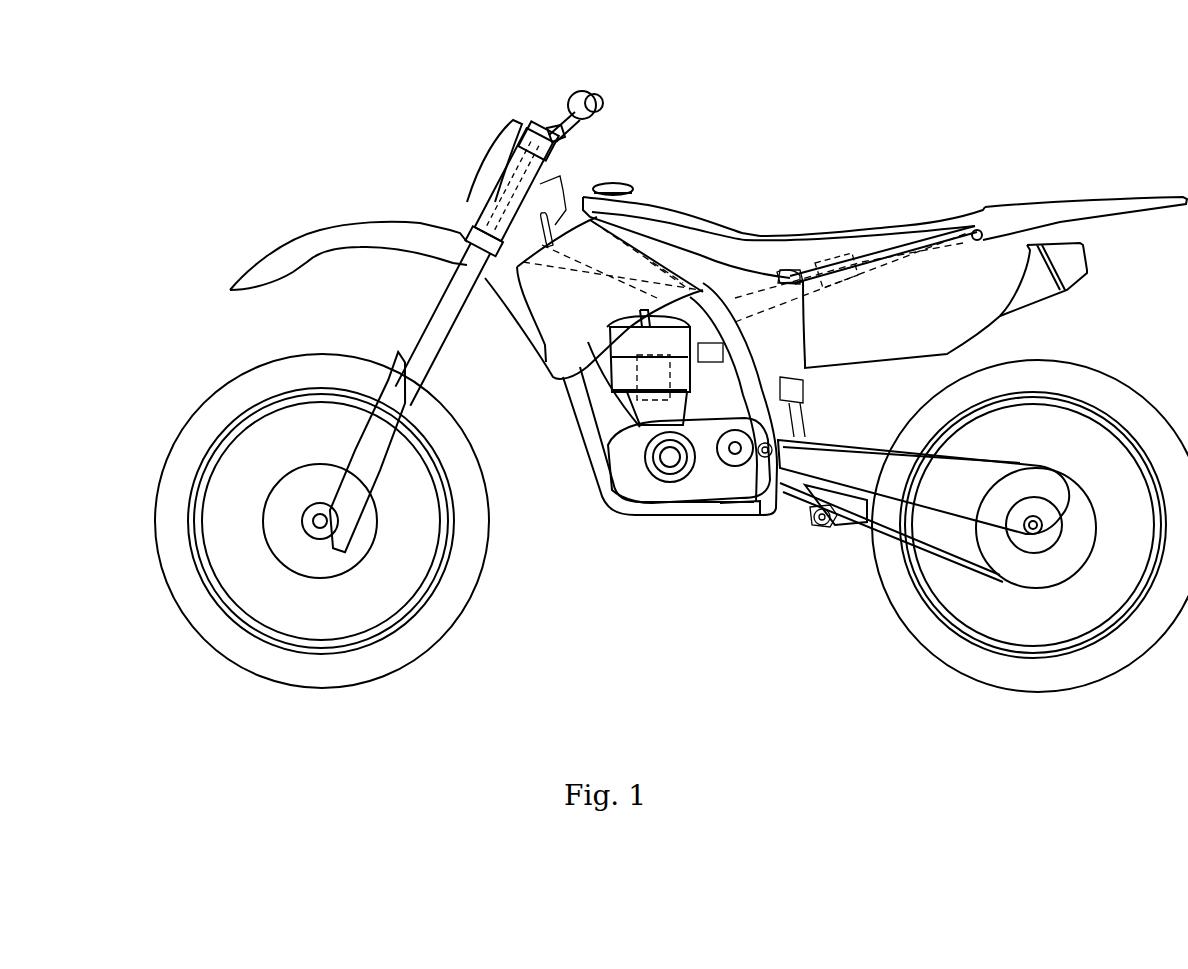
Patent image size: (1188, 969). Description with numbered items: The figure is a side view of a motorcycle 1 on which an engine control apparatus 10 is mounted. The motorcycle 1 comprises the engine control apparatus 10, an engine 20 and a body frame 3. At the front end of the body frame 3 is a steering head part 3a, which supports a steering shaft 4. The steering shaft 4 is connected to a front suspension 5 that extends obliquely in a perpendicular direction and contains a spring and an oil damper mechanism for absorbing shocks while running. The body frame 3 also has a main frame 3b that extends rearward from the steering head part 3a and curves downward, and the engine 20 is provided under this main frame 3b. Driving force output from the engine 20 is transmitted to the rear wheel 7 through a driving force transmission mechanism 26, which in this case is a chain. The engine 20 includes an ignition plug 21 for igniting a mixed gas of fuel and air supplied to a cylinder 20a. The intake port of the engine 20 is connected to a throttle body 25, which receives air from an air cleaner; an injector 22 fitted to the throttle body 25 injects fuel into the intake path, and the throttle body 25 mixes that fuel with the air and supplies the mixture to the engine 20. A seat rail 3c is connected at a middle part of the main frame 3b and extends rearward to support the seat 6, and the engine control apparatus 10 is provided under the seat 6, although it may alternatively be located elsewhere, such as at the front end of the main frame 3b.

The motorcycle 1 is at (808, 60).
The body frame 3 is at (717, 313).
The steering head part 3a is at (540, 184).
The main frame 3b is at (617, 393).
The seat rail 3c is at (927, 248).
The steering shaft 4 is at (515, 178).
The front suspension 5 is at (452, 308).
The seat 6 is at (867, 230).
The rear wheel 7 is at (903, 595).
The engine control apparatus 10 is at (825, 253).
The engine 20 is at (687, 324).
The cylinder 20a is at (627, 373).
The ignition plug 21 is at (673, 280).
The injector 22 is at (787, 270).
The throttle body 25 is at (712, 330).
The driving force transmission mechanism 26 is at (862, 523).